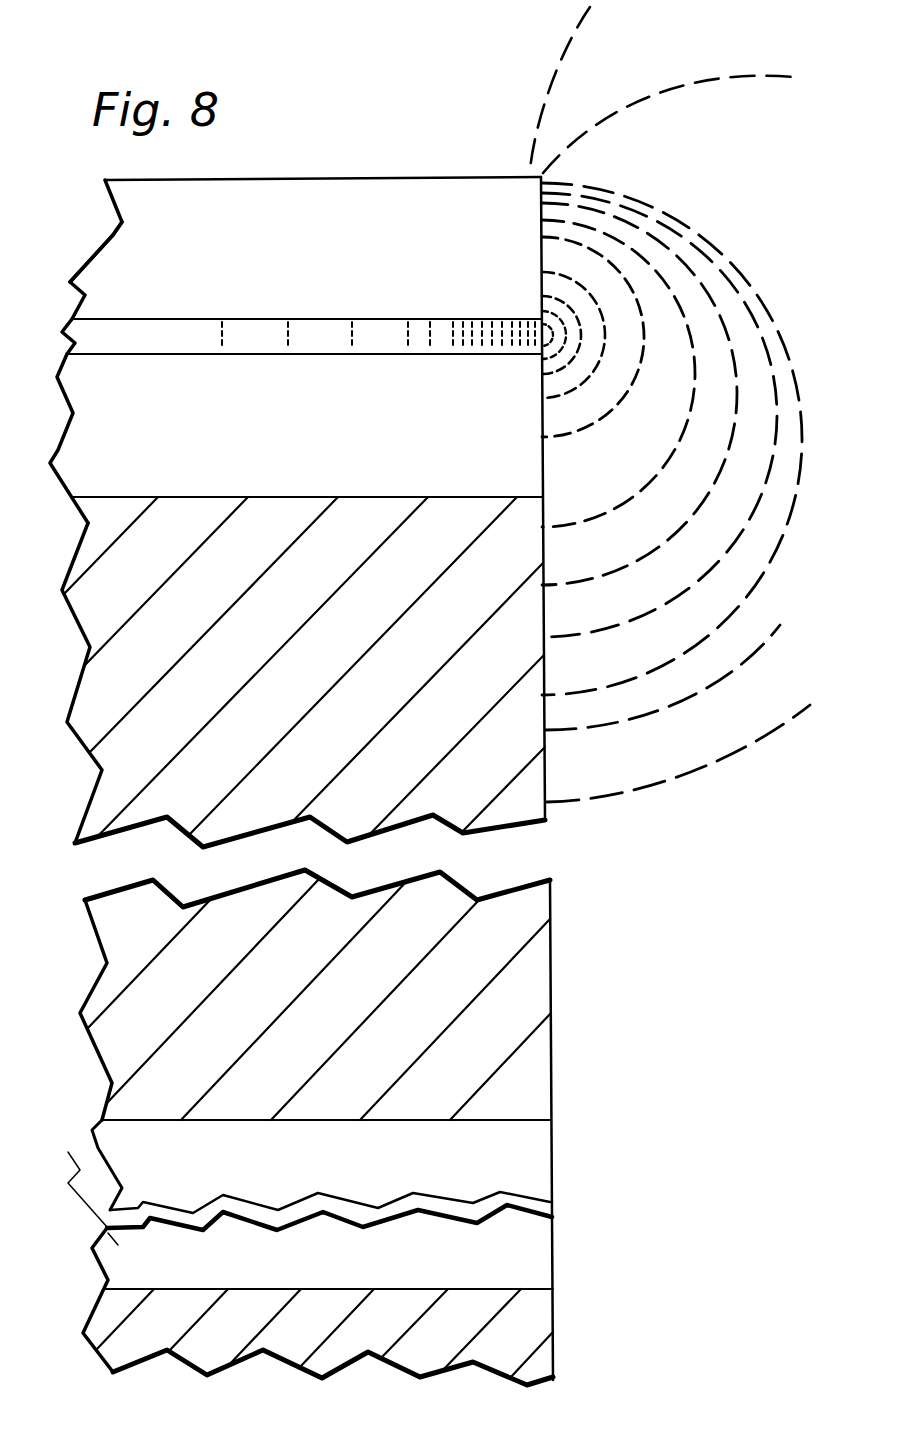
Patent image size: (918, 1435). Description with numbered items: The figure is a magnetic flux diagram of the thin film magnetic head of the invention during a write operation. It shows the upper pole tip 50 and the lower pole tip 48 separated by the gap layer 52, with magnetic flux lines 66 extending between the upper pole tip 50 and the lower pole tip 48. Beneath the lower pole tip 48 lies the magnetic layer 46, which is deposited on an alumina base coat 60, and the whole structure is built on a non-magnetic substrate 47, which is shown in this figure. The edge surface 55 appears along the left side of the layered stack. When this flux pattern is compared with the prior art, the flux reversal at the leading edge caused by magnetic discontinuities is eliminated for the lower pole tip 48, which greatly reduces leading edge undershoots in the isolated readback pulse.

The magnetic layer 46 is at (92, 530).
The non-magnetic substrate 47 is at (107, 1323).
The lower pole tip 48 is at (93, 401).
The upper pole tip 50 is at (120, 237).
The gap layer 52 is at (188, 332).
The edge surface 55 is at (88, 261).
The alumina base coat 60 is at (110, 1140).
The magnetic flux lines 66 is at (703, 248).